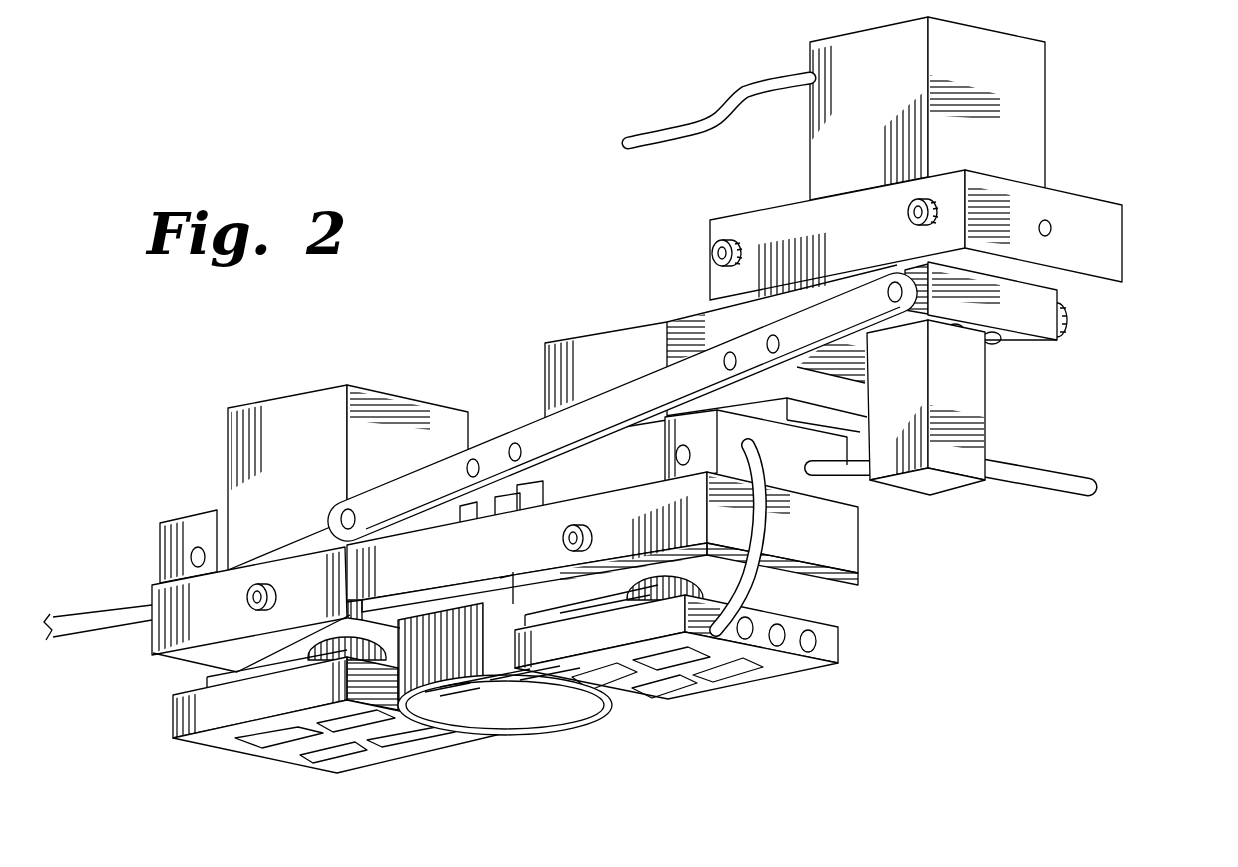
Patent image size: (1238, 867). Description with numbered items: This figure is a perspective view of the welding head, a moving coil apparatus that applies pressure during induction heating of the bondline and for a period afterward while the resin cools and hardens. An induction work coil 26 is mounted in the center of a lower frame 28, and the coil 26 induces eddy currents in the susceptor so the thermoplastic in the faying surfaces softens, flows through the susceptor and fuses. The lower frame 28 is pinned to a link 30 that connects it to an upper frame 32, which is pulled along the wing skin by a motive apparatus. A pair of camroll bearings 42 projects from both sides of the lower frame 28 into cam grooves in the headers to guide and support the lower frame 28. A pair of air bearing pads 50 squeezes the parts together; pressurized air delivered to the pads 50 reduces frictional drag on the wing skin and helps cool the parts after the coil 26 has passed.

The induction work coil 26 is at (605, 733).
The lower frame 28 is at (840, 545).
The link 30 is at (607, 402).
The upper frame 32 is at (1110, 238).
The camroll bearings 42 is at (262, 584).
The air bearing pads 50 is at (215, 778).